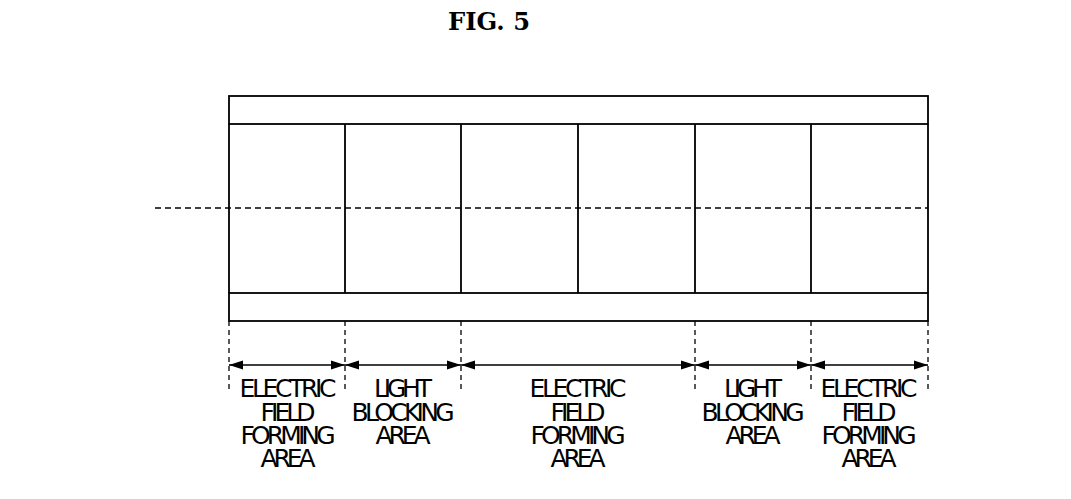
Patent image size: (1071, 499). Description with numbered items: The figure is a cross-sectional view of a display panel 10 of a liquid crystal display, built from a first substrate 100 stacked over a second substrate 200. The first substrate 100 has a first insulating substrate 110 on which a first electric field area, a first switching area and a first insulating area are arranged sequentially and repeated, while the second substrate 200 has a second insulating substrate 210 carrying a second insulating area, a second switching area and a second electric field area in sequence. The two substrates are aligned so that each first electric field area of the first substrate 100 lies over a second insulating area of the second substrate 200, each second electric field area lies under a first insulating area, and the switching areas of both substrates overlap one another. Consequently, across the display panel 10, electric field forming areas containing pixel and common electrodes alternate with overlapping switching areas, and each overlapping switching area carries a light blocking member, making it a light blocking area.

The display panel 10 is at (491, 209).
The first substrate 100 is at (151, 113).
The first insulating substrate 110 is at (240, 113).
The second substrate 200 is at (151, 208).
The second insulating substrate 210 is at (240, 310).